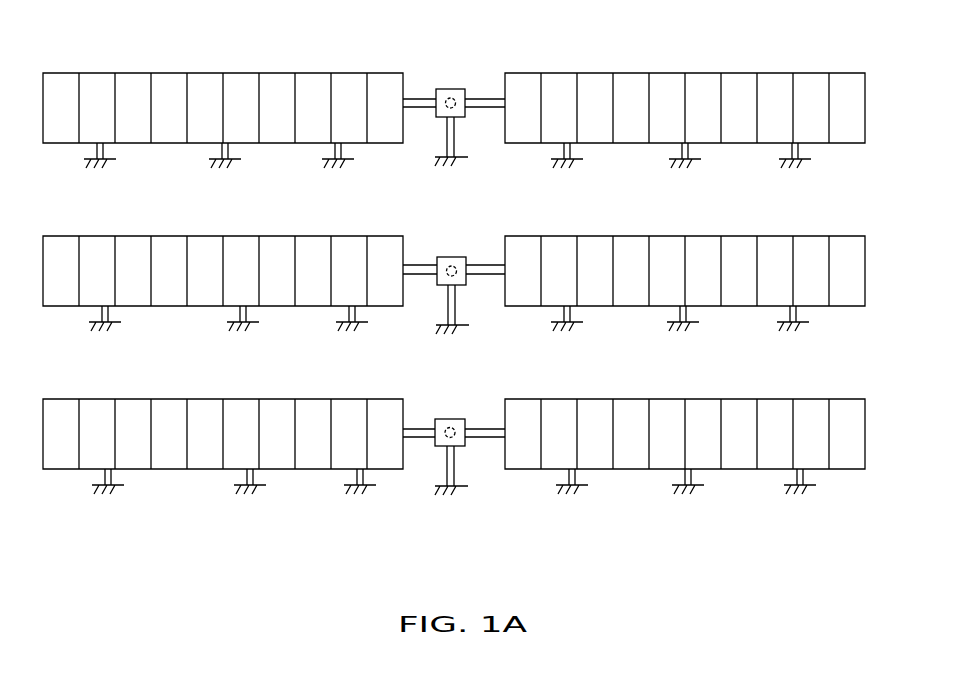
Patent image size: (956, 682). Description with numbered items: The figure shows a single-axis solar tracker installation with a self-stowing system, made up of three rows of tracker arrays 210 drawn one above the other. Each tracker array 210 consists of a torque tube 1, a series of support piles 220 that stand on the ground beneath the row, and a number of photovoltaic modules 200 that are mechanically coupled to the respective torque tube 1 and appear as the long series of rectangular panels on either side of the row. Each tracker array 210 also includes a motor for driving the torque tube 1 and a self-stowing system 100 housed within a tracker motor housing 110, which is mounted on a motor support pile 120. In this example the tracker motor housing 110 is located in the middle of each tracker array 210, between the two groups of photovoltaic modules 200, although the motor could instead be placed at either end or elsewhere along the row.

The tracker array 210 is at (99, 45).
The photovoltaic modules 200 is at (206, 85).
The support post 220 is at (106, 149).
The self-stowing system 100 is at (447, 100).
The torque tube 1 is at (478, 98).
The motor support pile 120 is at (443, 137).
The tracker motor housing 110 is at (465, 117).